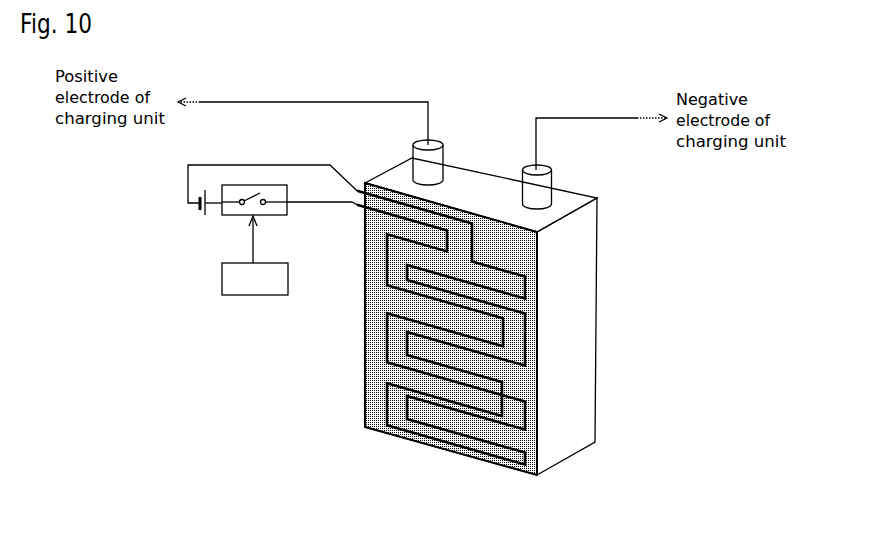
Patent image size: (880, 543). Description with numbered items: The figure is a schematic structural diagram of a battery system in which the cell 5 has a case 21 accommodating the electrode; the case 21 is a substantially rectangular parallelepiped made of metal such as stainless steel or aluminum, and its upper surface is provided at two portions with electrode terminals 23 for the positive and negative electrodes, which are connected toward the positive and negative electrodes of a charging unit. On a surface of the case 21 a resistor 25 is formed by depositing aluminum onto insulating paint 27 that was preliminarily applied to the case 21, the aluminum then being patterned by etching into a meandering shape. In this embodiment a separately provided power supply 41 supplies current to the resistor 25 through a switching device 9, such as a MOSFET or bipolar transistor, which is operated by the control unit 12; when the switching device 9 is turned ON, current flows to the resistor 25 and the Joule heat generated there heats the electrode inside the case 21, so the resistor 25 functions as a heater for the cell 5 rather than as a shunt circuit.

The cell 5 is at (515, 326).
The case 21 is at (596, 262).
The electrode terminal 23 is at (443, 148).
The resistor 25 is at (378, 428).
The paint 27 is at (533, 474).
The power supply 41 is at (200, 211).
The switching device 9 is at (273, 215).
The control unit 12 is at (282, 295).